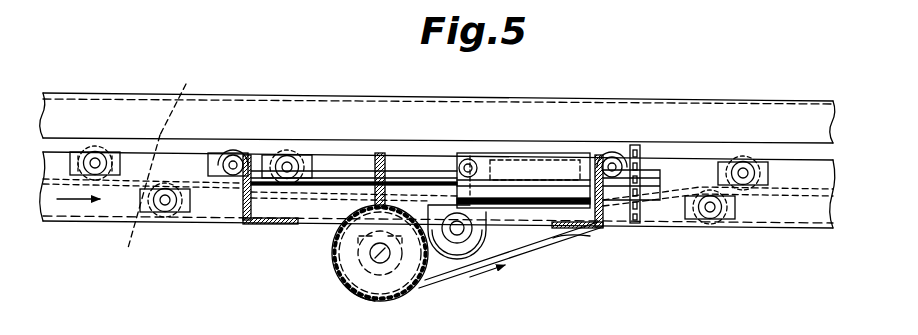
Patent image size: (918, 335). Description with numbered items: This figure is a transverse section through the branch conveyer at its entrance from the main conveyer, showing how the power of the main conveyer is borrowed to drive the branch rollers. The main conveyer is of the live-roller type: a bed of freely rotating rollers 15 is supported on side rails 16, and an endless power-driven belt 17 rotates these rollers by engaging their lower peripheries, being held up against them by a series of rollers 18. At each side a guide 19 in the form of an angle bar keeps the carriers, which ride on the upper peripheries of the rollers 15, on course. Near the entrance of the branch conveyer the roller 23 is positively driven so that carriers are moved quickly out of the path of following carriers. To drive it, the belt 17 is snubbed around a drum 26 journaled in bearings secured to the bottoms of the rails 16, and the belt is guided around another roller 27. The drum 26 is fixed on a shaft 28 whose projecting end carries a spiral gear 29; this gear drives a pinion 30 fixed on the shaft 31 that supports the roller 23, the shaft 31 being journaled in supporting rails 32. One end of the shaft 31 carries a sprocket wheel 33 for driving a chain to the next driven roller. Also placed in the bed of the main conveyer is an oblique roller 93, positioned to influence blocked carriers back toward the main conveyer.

The rollers 15 is at (95, 148).
The side rails 16 is at (75, 214).
The endless power-driven belt 17 is at (608, 258).
The rollers 18 is at (140, 204).
The guide 19 is at (682, 120).
The roller 23 is at (523, 153).
The drum 26 is at (335, 266).
The roller 27 is at (498, 243).
The shaft 28 is at (353, 291).
The spiral gear 29 is at (338, 273).
The pinion 30 is at (380, 152).
The shaft 31 is at (331, 171).
The supporting rails 32 is at (243, 205).
The sprocket wheel 33 is at (648, 222).
The oblique roller 93 is at (287, 152).